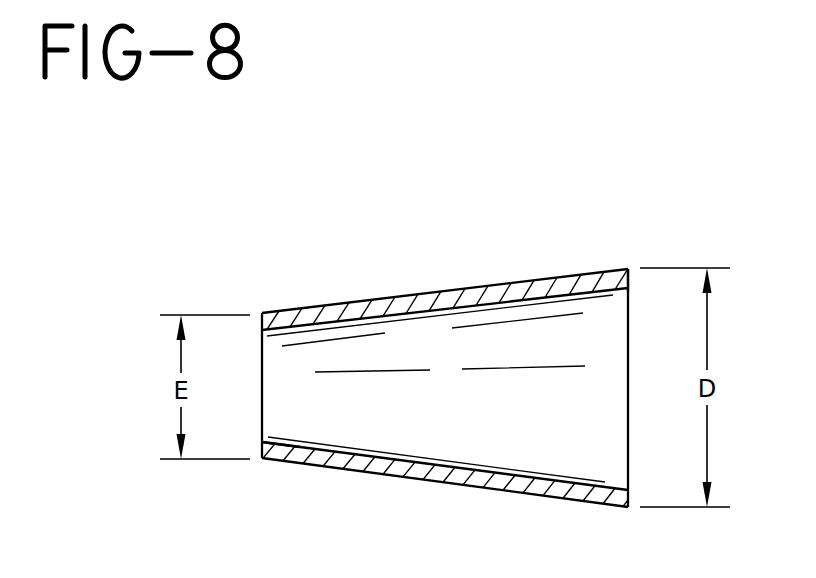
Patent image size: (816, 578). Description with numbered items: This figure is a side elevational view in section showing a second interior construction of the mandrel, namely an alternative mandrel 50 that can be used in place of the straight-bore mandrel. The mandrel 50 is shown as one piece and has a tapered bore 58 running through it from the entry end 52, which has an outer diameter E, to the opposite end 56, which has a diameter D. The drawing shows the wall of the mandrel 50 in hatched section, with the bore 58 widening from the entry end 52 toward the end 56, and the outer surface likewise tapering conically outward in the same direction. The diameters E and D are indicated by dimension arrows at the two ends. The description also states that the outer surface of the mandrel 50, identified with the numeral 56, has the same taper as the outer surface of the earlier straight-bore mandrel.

The mandrel 50 is at (503, 262).
The entry end 52 is at (262, 443).
The end 56 is at (631, 275).
The tapered bore 58 is at (378, 318).